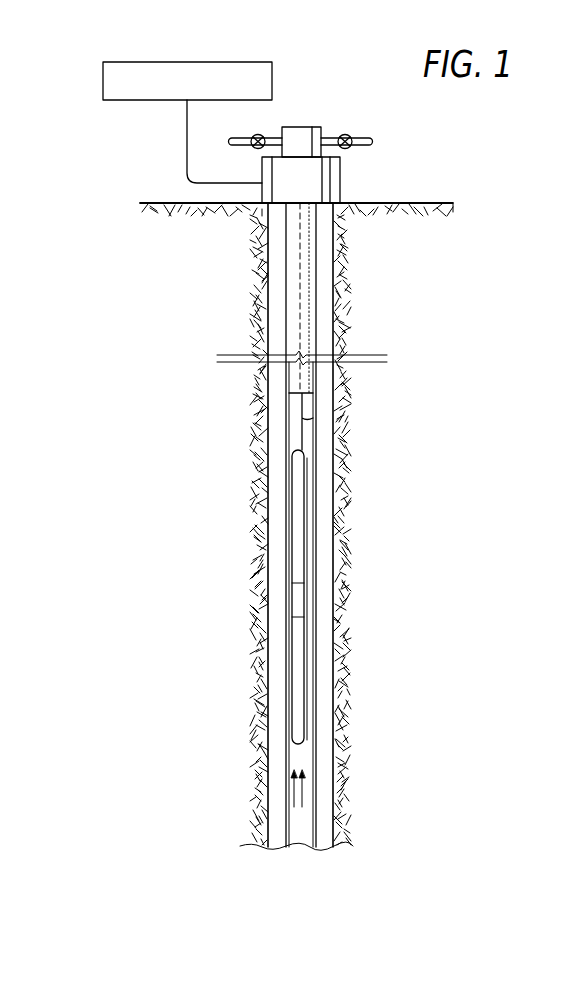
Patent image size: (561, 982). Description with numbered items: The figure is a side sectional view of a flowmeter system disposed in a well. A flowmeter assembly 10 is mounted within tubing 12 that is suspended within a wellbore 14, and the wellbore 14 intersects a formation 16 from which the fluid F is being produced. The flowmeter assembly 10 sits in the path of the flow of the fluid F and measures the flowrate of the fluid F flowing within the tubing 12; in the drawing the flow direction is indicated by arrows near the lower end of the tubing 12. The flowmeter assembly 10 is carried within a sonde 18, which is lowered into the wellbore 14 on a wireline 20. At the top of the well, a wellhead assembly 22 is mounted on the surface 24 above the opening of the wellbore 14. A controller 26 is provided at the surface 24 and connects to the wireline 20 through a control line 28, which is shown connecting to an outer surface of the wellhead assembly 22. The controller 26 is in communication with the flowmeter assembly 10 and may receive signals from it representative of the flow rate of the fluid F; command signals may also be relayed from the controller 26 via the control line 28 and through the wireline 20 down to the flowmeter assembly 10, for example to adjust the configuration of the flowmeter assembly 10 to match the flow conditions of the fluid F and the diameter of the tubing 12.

The flowmeter assembly 10 is at (303, 568).
The tubing 12 is at (283, 777).
The wellbore 14 is at (325, 710).
The formation 16 is at (340, 618).
The sonde 18 is at (290, 672).
The wireline 20 is at (303, 418).
The wellhead assembly 22 is at (360, 173).
The surface 24 is at (443, 203).
The controller 26 is at (274, 80).
The control line 28 is at (183, 136).
The fluid F is at (308, 797).